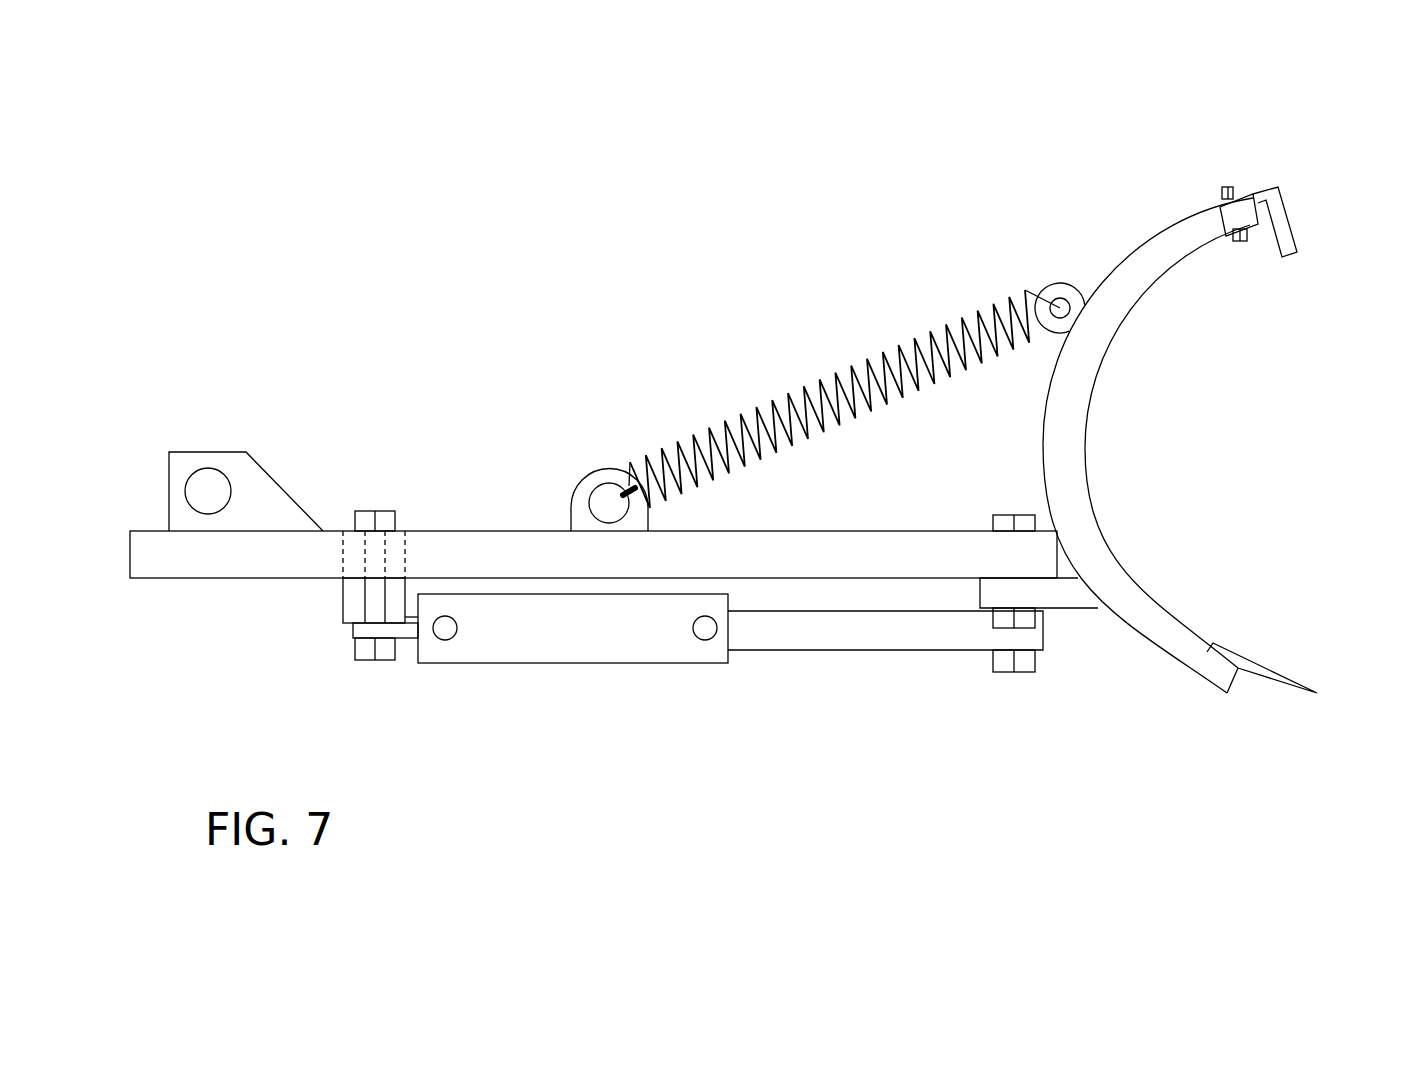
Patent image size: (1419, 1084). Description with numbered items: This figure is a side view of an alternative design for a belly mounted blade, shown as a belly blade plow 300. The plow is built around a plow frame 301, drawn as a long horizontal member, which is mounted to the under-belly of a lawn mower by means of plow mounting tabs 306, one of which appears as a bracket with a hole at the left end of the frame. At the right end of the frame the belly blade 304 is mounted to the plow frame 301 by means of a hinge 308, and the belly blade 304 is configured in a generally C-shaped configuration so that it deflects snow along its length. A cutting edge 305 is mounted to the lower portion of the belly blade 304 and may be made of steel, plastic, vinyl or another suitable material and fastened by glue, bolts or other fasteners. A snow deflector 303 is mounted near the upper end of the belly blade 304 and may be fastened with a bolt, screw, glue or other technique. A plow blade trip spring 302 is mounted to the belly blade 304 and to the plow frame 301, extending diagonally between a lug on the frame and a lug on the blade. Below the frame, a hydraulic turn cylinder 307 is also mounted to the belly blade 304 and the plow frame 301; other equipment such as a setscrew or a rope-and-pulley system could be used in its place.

The belly blade plow 300 is at (566, 201).
The plow frame 301 is at (508, 476).
The plow blade trip spring 302 is at (808, 349).
The snow deflector 303 is at (1326, 199).
The belly blade 304 is at (1119, 452).
The cutting edge 305 is at (1291, 723).
The plow mounting tabs 306 is at (191, 423).
The hydraulic turn cylinder 307 is at (602, 643).
The hinge 308 is at (1009, 492).